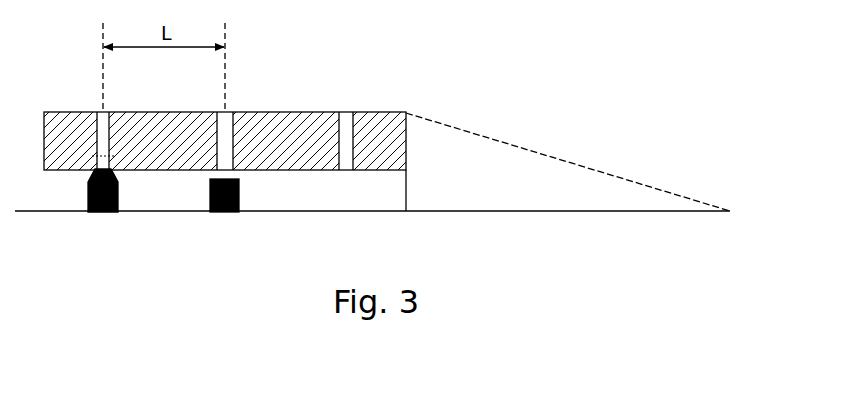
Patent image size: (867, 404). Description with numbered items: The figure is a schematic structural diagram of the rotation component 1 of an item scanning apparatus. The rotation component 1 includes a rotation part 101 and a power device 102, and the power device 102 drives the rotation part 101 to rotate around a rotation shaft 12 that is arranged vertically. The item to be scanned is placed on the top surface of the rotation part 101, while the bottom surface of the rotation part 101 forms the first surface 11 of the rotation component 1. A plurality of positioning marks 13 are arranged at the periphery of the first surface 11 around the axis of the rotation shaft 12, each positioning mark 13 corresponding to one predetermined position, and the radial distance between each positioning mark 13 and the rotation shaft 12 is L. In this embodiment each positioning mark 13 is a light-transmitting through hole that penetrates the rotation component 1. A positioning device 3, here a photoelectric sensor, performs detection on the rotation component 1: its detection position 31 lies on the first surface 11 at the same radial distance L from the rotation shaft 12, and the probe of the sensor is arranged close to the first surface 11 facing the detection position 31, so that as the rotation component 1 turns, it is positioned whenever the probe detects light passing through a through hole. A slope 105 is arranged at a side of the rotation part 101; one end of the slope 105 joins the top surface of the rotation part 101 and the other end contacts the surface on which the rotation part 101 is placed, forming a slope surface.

The rotation component 1 is at (385, 100).
The rotation part 101 is at (294, 120).
The power device 102 is at (227, 215).
The slope 105 is at (557, 169).
The first surface 11 is at (294, 173).
The rotation shaft 12 is at (226, 126).
The positioning marks 13 is at (106, 116).
The positioning device 3 is at (104, 215).
The detection position 31 is at (89, 169).